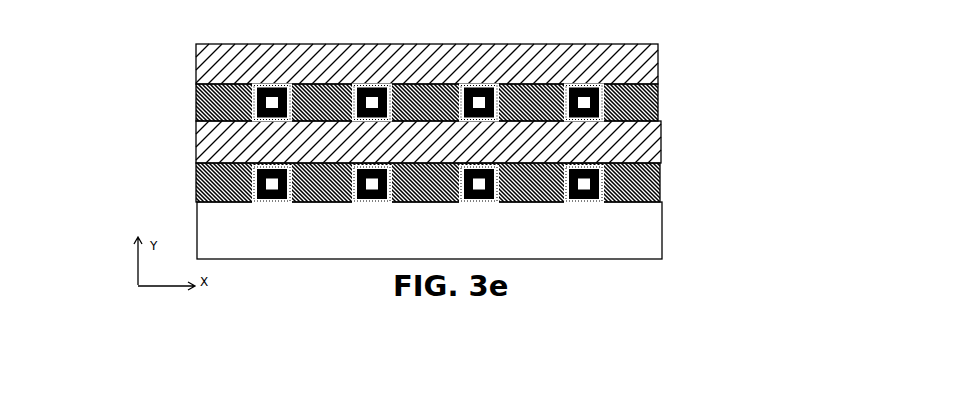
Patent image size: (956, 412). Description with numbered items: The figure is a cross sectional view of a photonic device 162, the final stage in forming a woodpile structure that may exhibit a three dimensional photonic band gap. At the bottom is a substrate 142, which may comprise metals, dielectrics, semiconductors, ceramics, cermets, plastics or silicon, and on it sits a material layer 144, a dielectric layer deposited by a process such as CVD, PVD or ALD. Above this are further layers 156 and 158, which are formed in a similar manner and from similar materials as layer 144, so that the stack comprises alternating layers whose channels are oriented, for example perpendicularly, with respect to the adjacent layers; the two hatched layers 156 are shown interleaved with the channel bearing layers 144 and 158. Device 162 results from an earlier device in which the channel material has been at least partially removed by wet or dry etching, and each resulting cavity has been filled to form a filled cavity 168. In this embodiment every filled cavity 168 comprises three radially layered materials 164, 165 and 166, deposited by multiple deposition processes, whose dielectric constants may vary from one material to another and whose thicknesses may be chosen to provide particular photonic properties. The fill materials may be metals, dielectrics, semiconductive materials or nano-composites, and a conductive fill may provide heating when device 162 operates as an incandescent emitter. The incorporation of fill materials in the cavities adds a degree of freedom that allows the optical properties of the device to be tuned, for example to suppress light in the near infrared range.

The substrate 142 is at (662, 232).
The material layer 144 is at (692, 187).
The layer 156 is at (658, 55).
The layer 158 is at (694, 98).
The device 162 is at (471, 111).
The material 164 is at (258, 194).
The material 165 is at (262, 184).
The material 166 is at (262, 172).
The filled cavity 168 is at (596, 73).